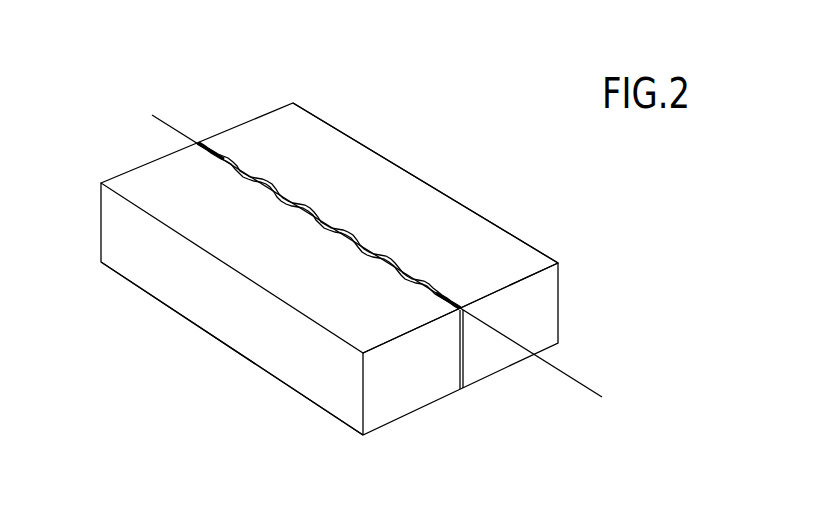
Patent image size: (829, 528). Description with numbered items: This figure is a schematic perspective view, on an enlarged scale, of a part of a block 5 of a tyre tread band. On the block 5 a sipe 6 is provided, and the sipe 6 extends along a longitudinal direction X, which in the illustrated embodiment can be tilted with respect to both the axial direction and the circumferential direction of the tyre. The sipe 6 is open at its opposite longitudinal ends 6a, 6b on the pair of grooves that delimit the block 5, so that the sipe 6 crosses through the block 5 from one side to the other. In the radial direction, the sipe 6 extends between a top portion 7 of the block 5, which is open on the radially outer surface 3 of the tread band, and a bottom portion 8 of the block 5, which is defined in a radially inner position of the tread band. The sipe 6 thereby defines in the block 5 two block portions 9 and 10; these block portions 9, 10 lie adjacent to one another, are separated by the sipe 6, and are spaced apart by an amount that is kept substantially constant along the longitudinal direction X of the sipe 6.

The radially outer surface 3 is at (134, 174).
The block 5 is at (356, 91).
The sipe 6 is at (249, 154).
The longitudinal end 6a is at (208, 142).
The longitudinal end 6b is at (457, 297).
The top portion 7 is at (450, 281).
The bottom portion 8 is at (461, 390).
The block portion 9 is at (393, 192).
The block portion 10 is at (267, 275).
The longitudinal direction X is at (575, 378).